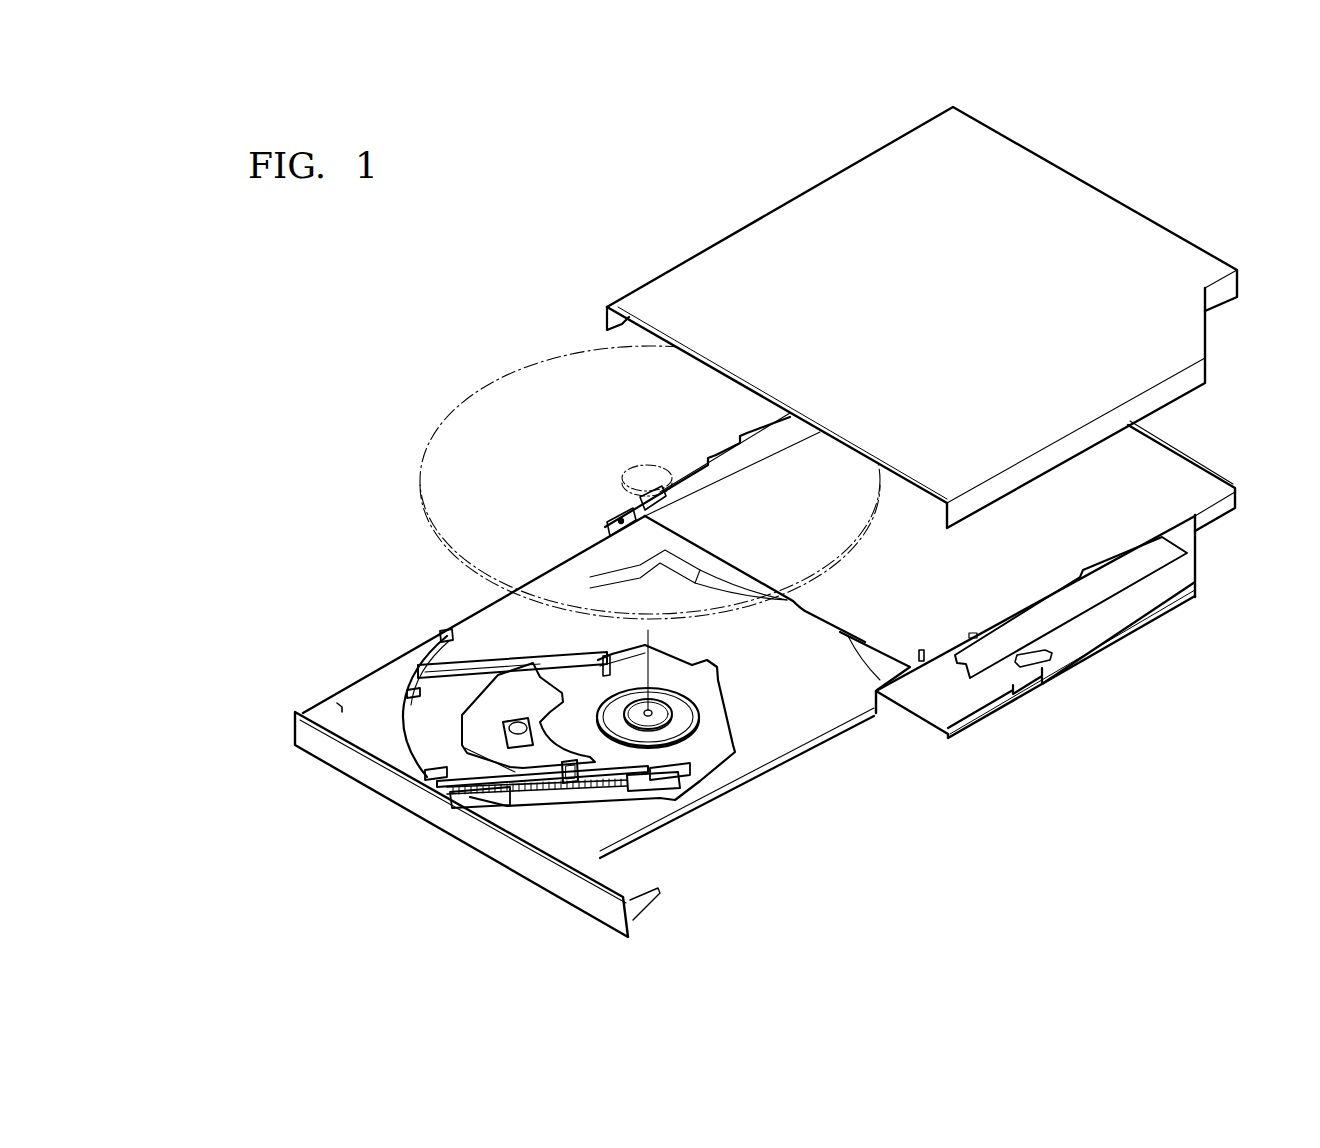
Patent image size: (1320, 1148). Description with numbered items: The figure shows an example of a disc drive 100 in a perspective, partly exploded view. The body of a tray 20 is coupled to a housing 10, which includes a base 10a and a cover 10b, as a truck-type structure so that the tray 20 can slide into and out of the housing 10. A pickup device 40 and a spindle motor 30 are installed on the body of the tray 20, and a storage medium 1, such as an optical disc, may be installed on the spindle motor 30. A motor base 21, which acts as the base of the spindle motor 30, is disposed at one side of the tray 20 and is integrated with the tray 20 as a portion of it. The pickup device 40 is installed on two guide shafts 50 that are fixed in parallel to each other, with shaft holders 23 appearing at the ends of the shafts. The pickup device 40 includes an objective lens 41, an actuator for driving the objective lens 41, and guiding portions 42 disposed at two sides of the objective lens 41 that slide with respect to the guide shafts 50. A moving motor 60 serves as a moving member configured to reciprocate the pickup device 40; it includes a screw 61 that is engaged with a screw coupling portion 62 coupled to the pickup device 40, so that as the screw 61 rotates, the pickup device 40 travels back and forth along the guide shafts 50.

The optical disc drive 100 is at (470, 290).
The storage medium 1 is at (444, 438).
The housing 10 is at (1278, 362).
The base 10a is at (1213, 467).
The cover 10b is at (1208, 375).
The tray 20 is at (640, 882).
The motor base 21 is at (713, 737).
The guide shaft holder 23 is at (405, 688).
The spindle motor 30 is at (683, 716).
The pickup device 40 is at (470, 727).
The objective lens 41 is at (538, 725).
The guiding portions 42 is at (527, 653).
The guide shafts 50 is at (438, 672).
The moving motor 60 is at (697, 775).
The screw 61 is at (483, 795).
The screw coupling portion 62 is at (562, 786).